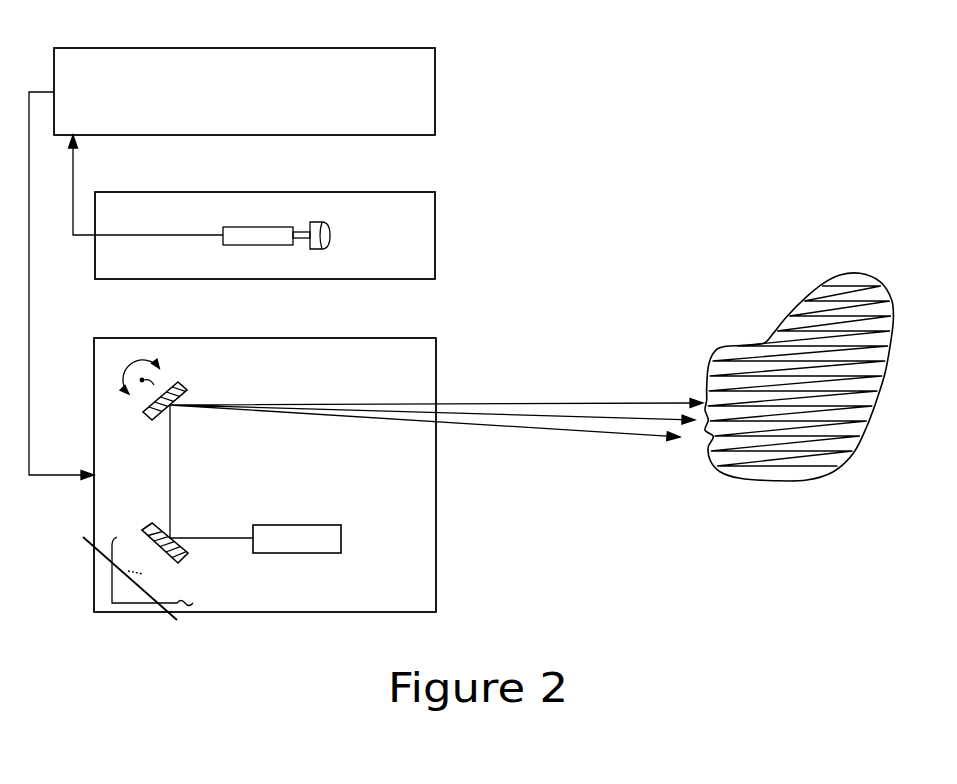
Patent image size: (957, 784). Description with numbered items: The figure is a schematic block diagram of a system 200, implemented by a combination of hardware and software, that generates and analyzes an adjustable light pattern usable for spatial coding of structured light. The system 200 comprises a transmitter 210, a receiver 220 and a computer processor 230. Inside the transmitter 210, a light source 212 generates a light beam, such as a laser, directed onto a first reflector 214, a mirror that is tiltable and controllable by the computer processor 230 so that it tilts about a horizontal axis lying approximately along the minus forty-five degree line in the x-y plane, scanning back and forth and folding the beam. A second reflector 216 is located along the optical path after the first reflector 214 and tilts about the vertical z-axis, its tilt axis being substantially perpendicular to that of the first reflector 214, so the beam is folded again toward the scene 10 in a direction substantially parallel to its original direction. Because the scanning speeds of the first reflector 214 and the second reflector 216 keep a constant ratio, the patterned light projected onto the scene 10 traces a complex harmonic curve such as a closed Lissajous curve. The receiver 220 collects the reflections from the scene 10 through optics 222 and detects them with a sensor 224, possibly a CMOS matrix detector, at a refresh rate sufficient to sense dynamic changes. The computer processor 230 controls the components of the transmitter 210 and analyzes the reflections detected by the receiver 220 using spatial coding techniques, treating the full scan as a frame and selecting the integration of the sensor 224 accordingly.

The system 200 is at (632, 148).
The computer processor 230 is at (140, 48).
The receiver 220 is at (182, 192).
The optics 222 is at (332, 233).
The sensor 224 is at (250, 245).
The transmitter 210 is at (183, 338).
The light source 212 is at (297, 525).
The first reflector 214 is at (142, 523).
The second reflector 216 is at (182, 382).
The scene 10 is at (804, 266).